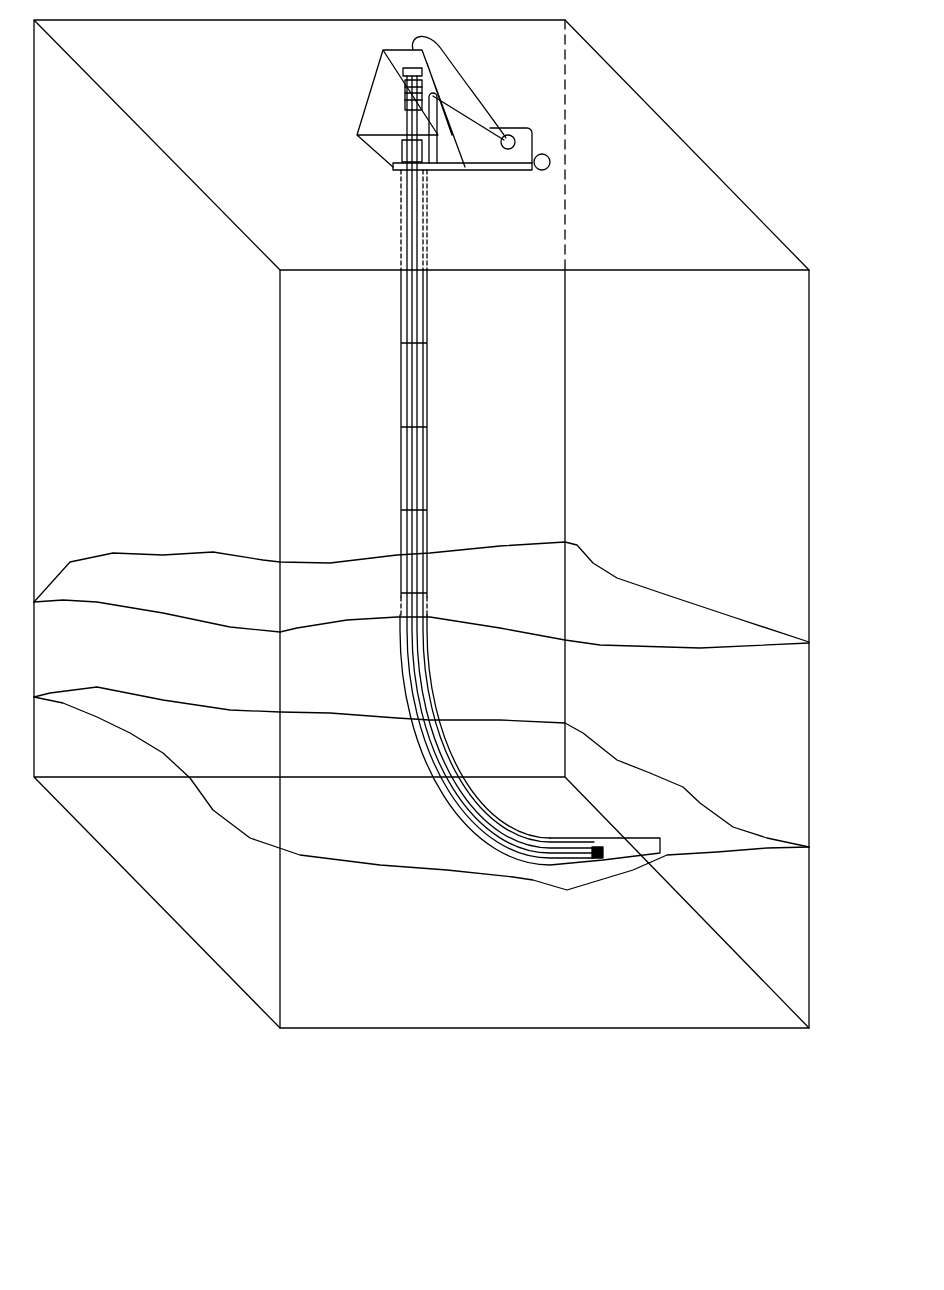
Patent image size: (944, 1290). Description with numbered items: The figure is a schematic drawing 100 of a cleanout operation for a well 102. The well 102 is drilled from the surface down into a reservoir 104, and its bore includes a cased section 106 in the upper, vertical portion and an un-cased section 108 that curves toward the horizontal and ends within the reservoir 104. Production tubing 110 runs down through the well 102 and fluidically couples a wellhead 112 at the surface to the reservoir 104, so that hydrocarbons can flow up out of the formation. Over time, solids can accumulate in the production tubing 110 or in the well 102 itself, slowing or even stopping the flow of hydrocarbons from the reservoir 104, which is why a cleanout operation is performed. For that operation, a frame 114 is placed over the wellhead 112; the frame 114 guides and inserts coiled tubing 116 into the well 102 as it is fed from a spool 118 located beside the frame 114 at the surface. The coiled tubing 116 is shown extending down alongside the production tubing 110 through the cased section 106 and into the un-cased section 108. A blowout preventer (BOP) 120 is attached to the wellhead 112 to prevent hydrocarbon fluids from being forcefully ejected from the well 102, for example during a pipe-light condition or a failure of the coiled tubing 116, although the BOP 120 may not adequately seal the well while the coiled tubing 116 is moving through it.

The schematic drawing 100 is at (421, 1181).
The well 102 is at (405, 665).
The reservoir 104 is at (787, 737).
The cased section 106 is at (429, 362).
The un-cased section 108 is at (484, 798).
The production tubing 110 is at (418, 308).
The wellhead 112 is at (401, 152).
The frame 114 is at (361, 120).
The coiled tubing 116 is at (467, 72).
The spool 118 is at (530, 130).
The blowout preventer (BOP) 120 is at (399, 68).